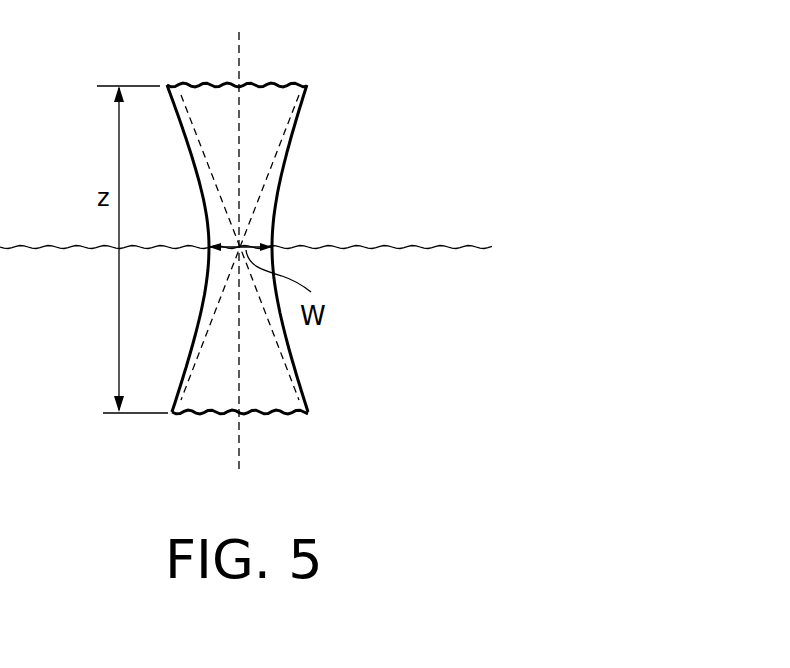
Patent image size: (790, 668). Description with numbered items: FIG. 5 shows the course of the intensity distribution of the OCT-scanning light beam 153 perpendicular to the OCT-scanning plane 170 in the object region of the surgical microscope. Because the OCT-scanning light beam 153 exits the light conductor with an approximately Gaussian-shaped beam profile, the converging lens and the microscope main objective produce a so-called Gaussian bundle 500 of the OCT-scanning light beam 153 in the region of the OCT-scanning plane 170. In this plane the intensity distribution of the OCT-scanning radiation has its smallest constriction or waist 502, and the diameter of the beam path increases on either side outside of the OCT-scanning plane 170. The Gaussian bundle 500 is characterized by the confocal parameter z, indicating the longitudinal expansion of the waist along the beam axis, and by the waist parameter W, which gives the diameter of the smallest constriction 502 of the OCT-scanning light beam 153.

The OCT-scanning light beam 153 is at (267, 95).
The Gaussian bundle 500 is at (331, 189).
The waist 502 is at (272, 247).
The OCT-scanning plane 170 is at (455, 247).